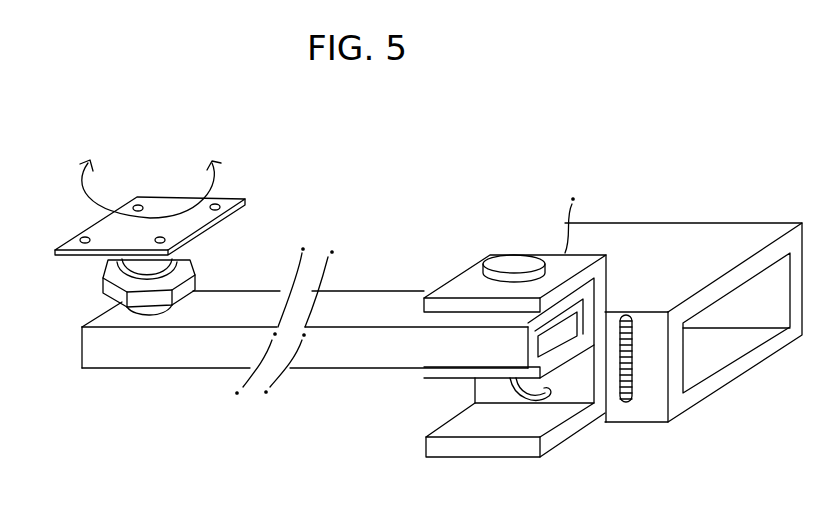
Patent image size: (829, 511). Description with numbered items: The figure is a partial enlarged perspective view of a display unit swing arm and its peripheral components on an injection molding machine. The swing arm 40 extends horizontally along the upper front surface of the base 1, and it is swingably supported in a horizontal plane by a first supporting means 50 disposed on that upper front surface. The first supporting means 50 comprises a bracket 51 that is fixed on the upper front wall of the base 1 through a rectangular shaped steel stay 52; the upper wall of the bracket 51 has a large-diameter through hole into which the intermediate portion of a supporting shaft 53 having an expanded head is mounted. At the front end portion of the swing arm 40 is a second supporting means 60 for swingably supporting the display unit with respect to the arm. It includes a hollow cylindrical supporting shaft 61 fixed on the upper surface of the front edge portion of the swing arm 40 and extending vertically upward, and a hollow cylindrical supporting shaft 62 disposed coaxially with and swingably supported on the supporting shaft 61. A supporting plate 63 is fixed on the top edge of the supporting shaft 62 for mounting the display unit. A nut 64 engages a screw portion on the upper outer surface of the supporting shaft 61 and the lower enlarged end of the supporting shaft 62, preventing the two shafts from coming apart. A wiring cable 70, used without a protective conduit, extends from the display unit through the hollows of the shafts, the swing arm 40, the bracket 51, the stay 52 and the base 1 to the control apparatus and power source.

The base 1 is at (676, 250).
The swing arm 40 is at (208, 350).
The first supporting means 50 is at (557, 186).
The bracket 51 is at (577, 258).
The stay 52 is at (613, 397).
The supporting shaft 53 is at (503, 256).
The second supporting means 60 is at (155, 160).
The supporting shaft 61 is at (143, 313).
The supporting shaft 62 is at (167, 265).
The supporting plate 63 is at (230, 197).
The nut 64 is at (113, 288).
The wiring cable 70 is at (477, 398).